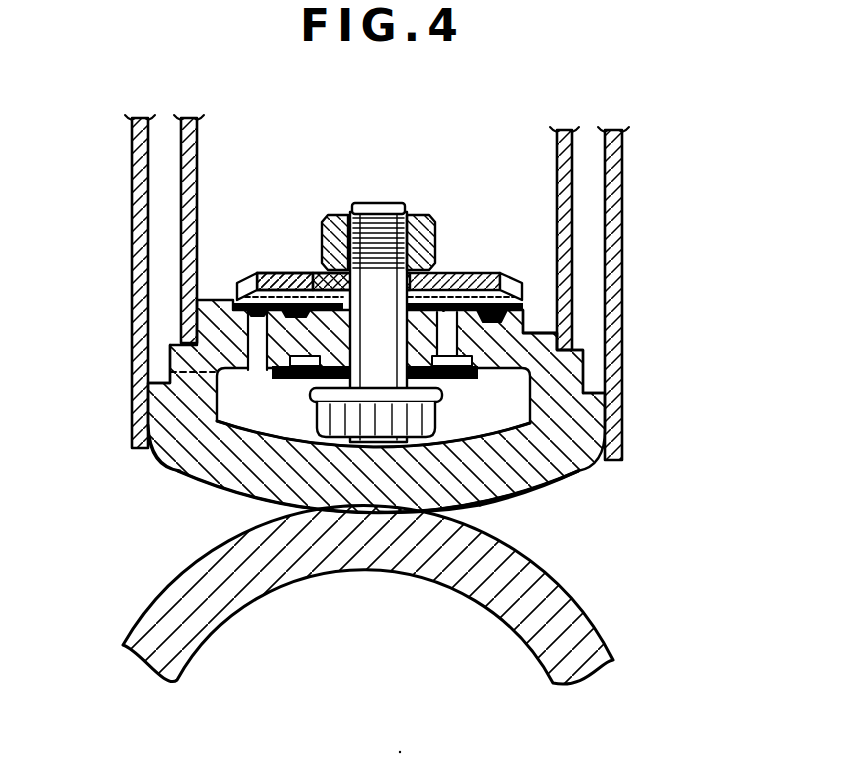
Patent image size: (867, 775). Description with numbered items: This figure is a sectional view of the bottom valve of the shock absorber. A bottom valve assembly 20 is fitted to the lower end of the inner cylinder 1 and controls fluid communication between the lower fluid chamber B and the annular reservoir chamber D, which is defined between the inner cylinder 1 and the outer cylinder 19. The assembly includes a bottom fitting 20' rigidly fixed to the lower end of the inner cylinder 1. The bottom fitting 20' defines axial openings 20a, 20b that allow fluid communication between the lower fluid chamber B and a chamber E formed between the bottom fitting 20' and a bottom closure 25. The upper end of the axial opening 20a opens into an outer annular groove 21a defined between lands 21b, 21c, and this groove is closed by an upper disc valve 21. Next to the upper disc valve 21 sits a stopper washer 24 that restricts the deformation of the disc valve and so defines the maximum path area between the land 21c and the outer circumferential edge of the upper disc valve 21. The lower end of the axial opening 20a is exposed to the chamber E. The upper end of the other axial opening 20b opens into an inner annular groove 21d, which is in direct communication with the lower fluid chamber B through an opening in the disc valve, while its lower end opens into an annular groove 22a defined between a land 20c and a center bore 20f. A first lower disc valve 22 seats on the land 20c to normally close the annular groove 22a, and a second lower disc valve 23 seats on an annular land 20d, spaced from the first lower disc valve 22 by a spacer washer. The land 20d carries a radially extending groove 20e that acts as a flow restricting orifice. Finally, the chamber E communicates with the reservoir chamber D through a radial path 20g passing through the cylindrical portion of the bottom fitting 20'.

The inner cylinder 1 is at (176, 147).
The outer cylinder 19 is at (128, 183).
The bottom valve assembly 20 is at (334, 406).
The bottom fitting 20' is at (611, 316).
The axial opening 20a is at (258, 342).
The axial opening 20b is at (457, 333).
The land 20c is at (262, 385).
The annular land 20d is at (196, 447).
The radially-extending groove 20e is at (572, 398).
The center bore 20f is at (367, 345).
The radial path 20g is at (172, 398).
The upper disc valve 21 is at (265, 285).
The outer annular groove 21a is at (235, 330).
The land 21b is at (238, 312).
The land 21c is at (280, 302).
The inner annular groove 21d is at (470, 300).
The first lower disc valve 22 is at (594, 473).
The annular groove 22a is at (472, 358).
The second lower disc valve 23 is at (537, 471).
The stopper washer 24 is at (470, 478).
The bottom closure 25 is at (445, 284).
The lower fluid chamber B is at (310, 150).
The annular reservoir chamber D is at (593, 167).
The chamber E is at (288, 428).